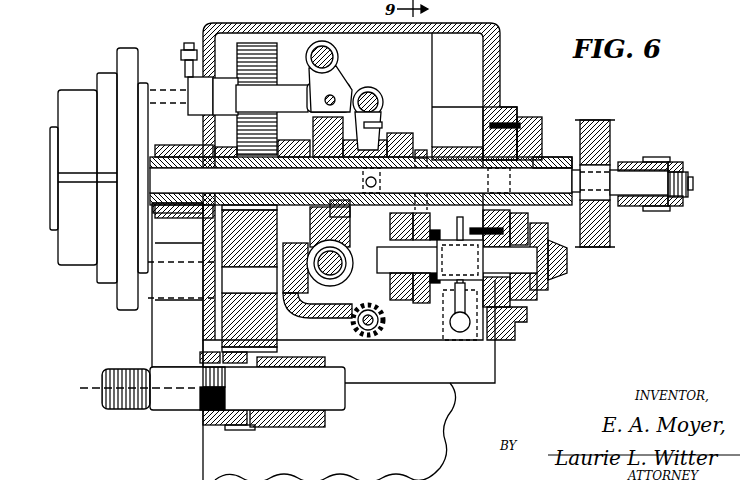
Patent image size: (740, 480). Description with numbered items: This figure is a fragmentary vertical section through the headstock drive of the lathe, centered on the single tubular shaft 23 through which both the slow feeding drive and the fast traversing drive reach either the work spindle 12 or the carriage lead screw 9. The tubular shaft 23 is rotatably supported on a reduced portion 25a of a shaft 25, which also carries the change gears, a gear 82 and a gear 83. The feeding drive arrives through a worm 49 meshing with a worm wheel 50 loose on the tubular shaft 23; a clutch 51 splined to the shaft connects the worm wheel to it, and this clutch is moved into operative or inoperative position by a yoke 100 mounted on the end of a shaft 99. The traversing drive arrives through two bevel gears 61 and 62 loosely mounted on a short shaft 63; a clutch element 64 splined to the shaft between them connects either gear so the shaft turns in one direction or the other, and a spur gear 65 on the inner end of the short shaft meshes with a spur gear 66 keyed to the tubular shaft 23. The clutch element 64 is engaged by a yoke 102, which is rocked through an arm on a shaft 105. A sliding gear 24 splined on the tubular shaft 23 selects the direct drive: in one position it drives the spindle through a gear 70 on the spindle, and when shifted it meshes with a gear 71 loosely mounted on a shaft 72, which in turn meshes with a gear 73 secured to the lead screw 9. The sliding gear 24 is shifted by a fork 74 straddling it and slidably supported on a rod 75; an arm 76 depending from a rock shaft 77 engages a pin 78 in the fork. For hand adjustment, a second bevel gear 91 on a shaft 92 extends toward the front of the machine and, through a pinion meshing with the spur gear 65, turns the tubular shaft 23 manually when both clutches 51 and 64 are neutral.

The lead screw 9 is at (140, 410).
The work spindle 12 is at (50, 201).
The tubular shaft 23 is at (318, 168).
The sliding gear 24 is at (302, 141).
The shaft 25 is at (552, 173).
The reduced portion of shaft 25a is at (190, 182).
The worm 49 is at (326, 286).
The worm wheel 50 is at (316, 100).
The clutch 51 is at (382, 125).
The bevel gear 61 is at (527, 311).
The bevel gear 62 is at (430, 303).
The short shaft 63 is at (566, 258).
The clutch element 64 is at (462, 332).
The spur gear 65 is at (397, 305).
The spur gear 66 is at (413, 140).
The gear 70 is at (250, 43).
The gear 71 is at (237, 327).
The shaft 72 is at (162, 323).
The gear 73 is at (242, 430).
The fork 74 is at (280, 83).
The rod 75 is at (188, 97).
The arm 76 is at (338, 67).
The rock shaft 77 is at (328, 42).
The pin 78 is at (333, 96).
The gear 82 is at (612, 230).
The gear 83 is at (657, 212).
The bevel gear 91 is at (356, 331).
The shaft 92 is at (356, 338).
The shaft 99 is at (380, 95).
The yoke 100 is at (372, 126).
The yoke 102 is at (462, 226).
The shaft 105 is at (445, 330).